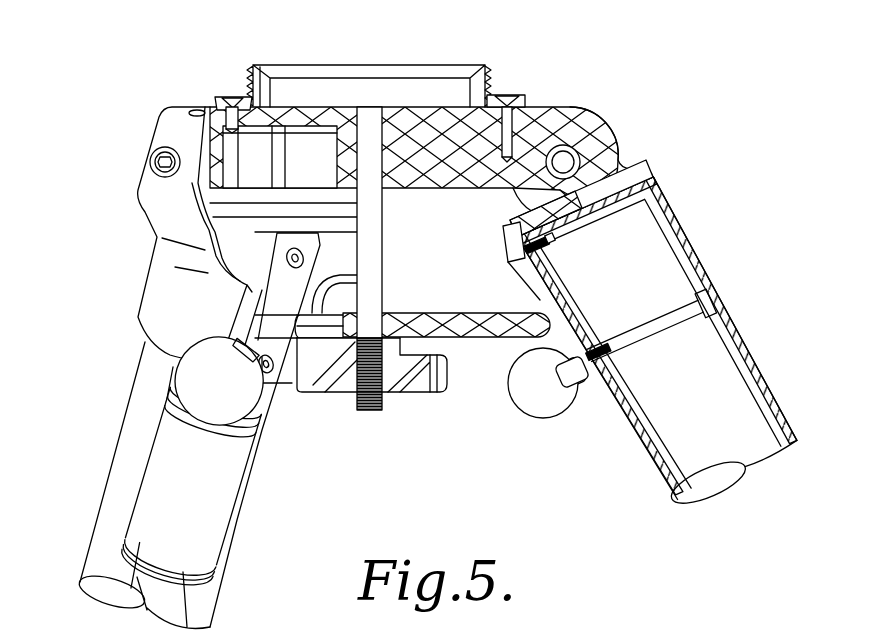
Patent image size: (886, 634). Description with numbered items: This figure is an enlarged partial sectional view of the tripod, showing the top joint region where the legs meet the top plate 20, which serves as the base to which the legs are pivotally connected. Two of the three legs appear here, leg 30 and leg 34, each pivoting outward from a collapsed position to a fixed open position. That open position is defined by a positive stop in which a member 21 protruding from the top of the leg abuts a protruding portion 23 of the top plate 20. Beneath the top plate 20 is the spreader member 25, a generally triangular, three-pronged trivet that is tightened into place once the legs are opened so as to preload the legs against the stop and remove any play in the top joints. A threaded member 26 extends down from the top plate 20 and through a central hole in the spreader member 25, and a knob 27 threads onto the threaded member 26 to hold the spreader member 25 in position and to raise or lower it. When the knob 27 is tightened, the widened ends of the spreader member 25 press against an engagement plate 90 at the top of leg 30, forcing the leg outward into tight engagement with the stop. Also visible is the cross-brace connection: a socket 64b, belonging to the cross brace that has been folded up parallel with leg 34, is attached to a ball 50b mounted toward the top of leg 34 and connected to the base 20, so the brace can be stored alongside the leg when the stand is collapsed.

The top plate 20 is at (252, 72).
The member protruding from the top of the leg 21 is at (538, 222).
The protruding portion of the top plate 23 is at (600, 143).
The spreader member 25 is at (470, 340).
The threaded member 26 is at (370, 411).
The knob 27 is at (400, 393).
The leg 30 is at (770, 377).
The leg 34 is at (142, 421).
The ball 50b is at (545, 402).
The socket 64b is at (150, 490).
The engagement plate 90 is at (536, 278).